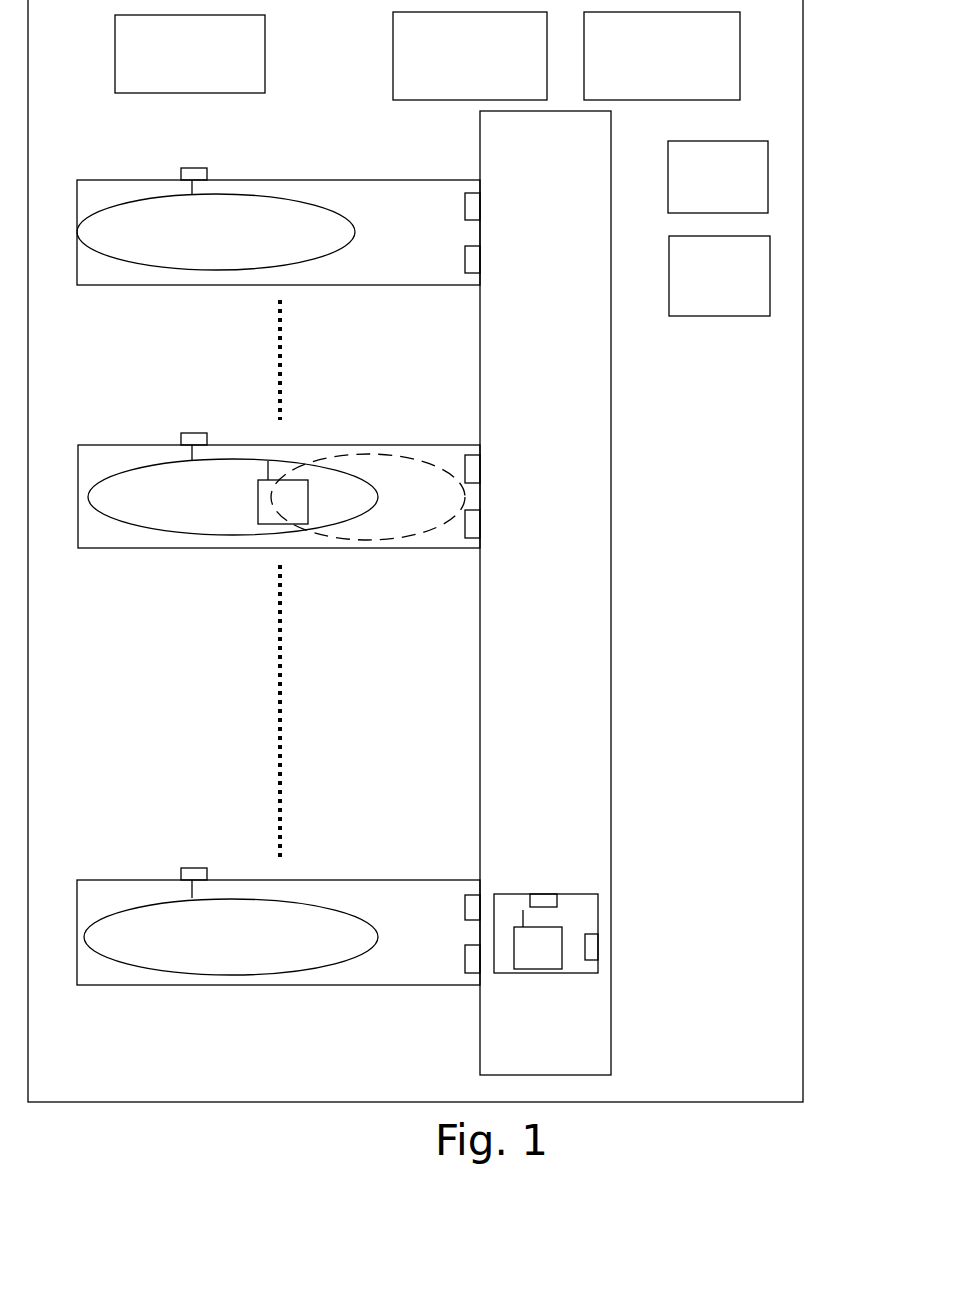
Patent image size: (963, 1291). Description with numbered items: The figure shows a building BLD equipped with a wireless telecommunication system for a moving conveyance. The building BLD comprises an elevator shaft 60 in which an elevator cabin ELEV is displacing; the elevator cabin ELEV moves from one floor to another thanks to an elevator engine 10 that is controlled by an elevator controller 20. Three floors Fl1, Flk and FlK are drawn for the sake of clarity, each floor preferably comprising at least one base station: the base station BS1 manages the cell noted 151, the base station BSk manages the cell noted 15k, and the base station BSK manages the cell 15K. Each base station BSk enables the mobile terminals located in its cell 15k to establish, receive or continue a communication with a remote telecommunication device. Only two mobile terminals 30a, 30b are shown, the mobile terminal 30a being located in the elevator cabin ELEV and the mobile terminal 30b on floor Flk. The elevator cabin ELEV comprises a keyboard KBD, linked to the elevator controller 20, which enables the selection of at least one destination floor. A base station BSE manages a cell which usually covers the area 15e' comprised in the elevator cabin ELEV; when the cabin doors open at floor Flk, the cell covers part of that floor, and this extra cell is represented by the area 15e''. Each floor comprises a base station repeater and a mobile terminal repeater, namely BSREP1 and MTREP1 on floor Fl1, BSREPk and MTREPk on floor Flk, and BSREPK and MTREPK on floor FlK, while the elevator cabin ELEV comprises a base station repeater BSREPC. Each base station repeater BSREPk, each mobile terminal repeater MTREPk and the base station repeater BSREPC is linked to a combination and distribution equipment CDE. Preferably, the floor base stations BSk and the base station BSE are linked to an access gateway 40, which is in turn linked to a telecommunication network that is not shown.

The elevator engine 10 is at (393, 33).
The elevator controller 20 is at (734, 88).
The access gateway 40 is at (265, 72).
The elevator shaft 60 is at (611, 786).
The building BLD is at (803, 571).
The base station of the elevator BSE is at (718, 177).
The combination and distribution equipment CDE is at (719, 276).
The floor K FlK is at (312, 180).
The floor k Flk is at (313, 445).
The floor 1 Fl1 is at (312, 880).
The cell of floor K 15K is at (150, 196).
The cell of floor k 15k is at (152, 466).
The cell of floor 1 151 is at (150, 902).
The extra cell area 15e'' is at (368, 476).
The area of the elevator cell 15e' is at (632, 979).
The base station of floor K BSK is at (198, 168).
The base station of floor k BSk is at (206, 433).
The base station of floor 1 BS1 is at (206, 868).
The mobile terminal repeater of floor K MTREPK is at (465, 213).
The mobile terminal repeater of floor k MTREPk is at (465, 477).
The mobile terminal repeater of floor 1 MTREP1 is at (465, 912).
The base station repeater of floor K BSREPK is at (468, 274).
The base station repeater of floor k BSREPk is at (468, 539).
The base station repeater of floor 1 BSREP1 is at (468, 974).
The base station repeater of the cabin BSREPC is at (558, 860).
The mobile terminal 30a is at (538, 939).
The mobile terminal 30b is at (283, 492).
The keyboard KBD is at (598, 952).
The elevator cabin ELEV is at (535, 973).